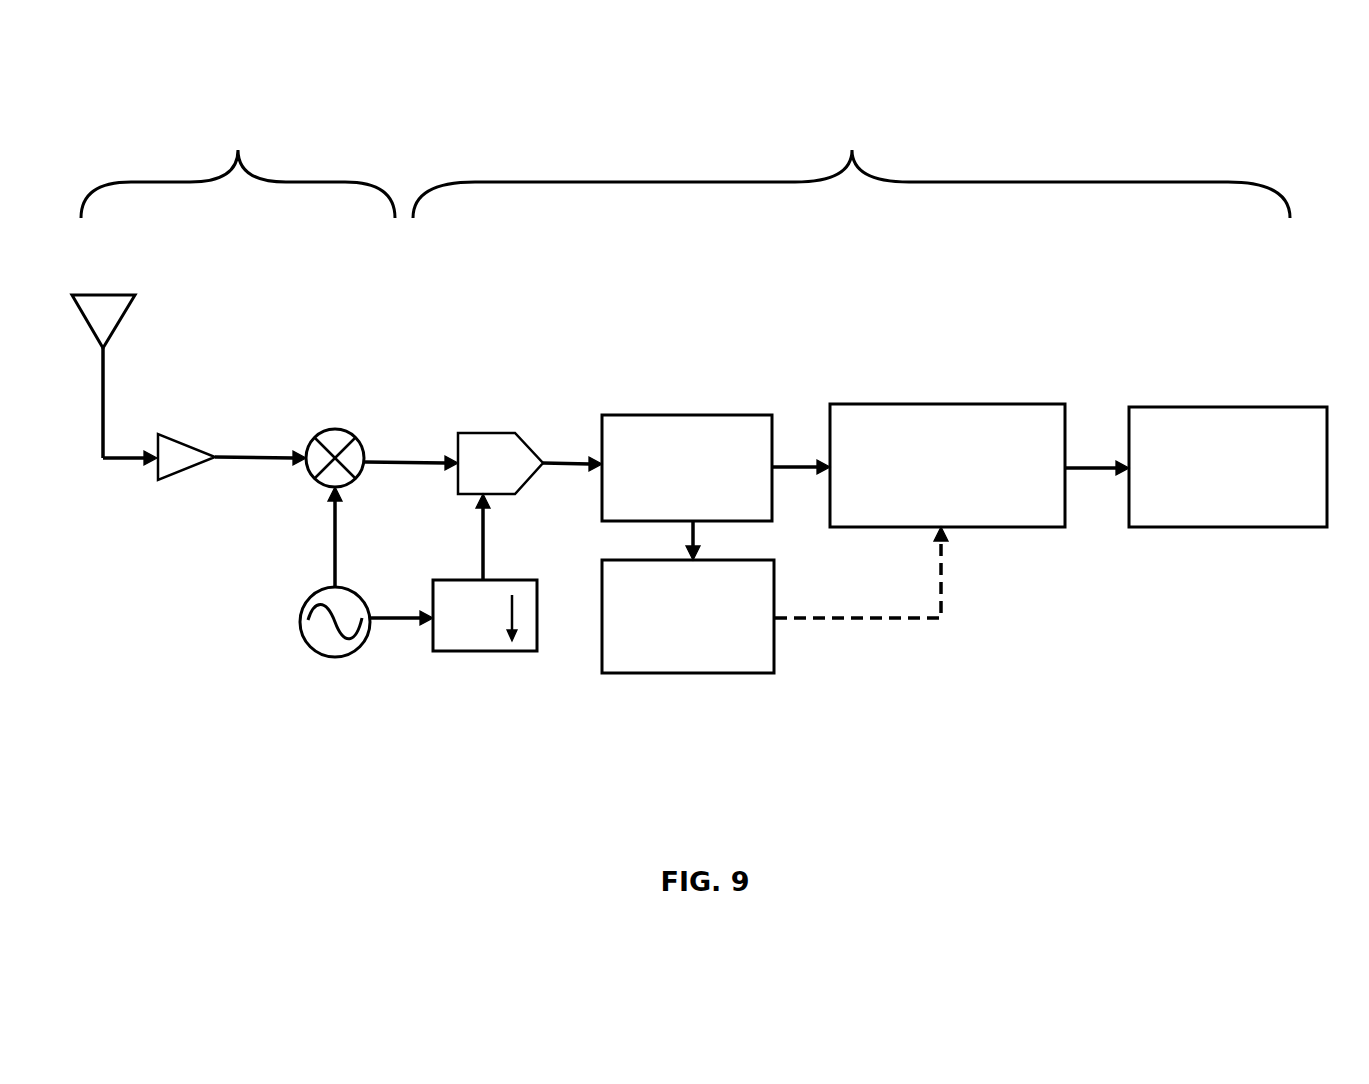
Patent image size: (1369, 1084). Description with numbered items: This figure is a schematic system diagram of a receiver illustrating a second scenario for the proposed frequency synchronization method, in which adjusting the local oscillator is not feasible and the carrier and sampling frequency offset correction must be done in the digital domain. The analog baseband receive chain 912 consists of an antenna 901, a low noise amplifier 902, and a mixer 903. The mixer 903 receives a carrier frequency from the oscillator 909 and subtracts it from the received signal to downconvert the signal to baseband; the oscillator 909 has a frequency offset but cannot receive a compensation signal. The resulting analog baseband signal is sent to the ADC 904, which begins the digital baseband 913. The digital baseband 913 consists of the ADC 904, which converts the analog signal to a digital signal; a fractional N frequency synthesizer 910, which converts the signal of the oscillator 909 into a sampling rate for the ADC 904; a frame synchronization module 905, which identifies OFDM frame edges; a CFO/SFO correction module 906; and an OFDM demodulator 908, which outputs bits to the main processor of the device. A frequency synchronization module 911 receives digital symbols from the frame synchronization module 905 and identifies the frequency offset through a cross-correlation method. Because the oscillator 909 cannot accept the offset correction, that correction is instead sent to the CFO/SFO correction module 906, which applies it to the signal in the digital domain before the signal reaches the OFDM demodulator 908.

The antenna 901 is at (124, 283).
The low noise amplifier 902 is at (197, 438).
The mixer 903 is at (347, 422).
The ADC 904 is at (528, 432).
The frame synchronization module 905 is at (692, 413).
The CFO/SFO correction module 906 is at (862, 402).
The OFDM demodulator 908 is at (1197, 400).
The oscillator 909 is at (300, 592).
The fractional N frequency synthesizer 910 is at (453, 573).
The frequency synchronization module 911 is at (595, 590).
The analog baseband receive chain 912 is at (238, 168).
The digital baseband 913 is at (851, 168).